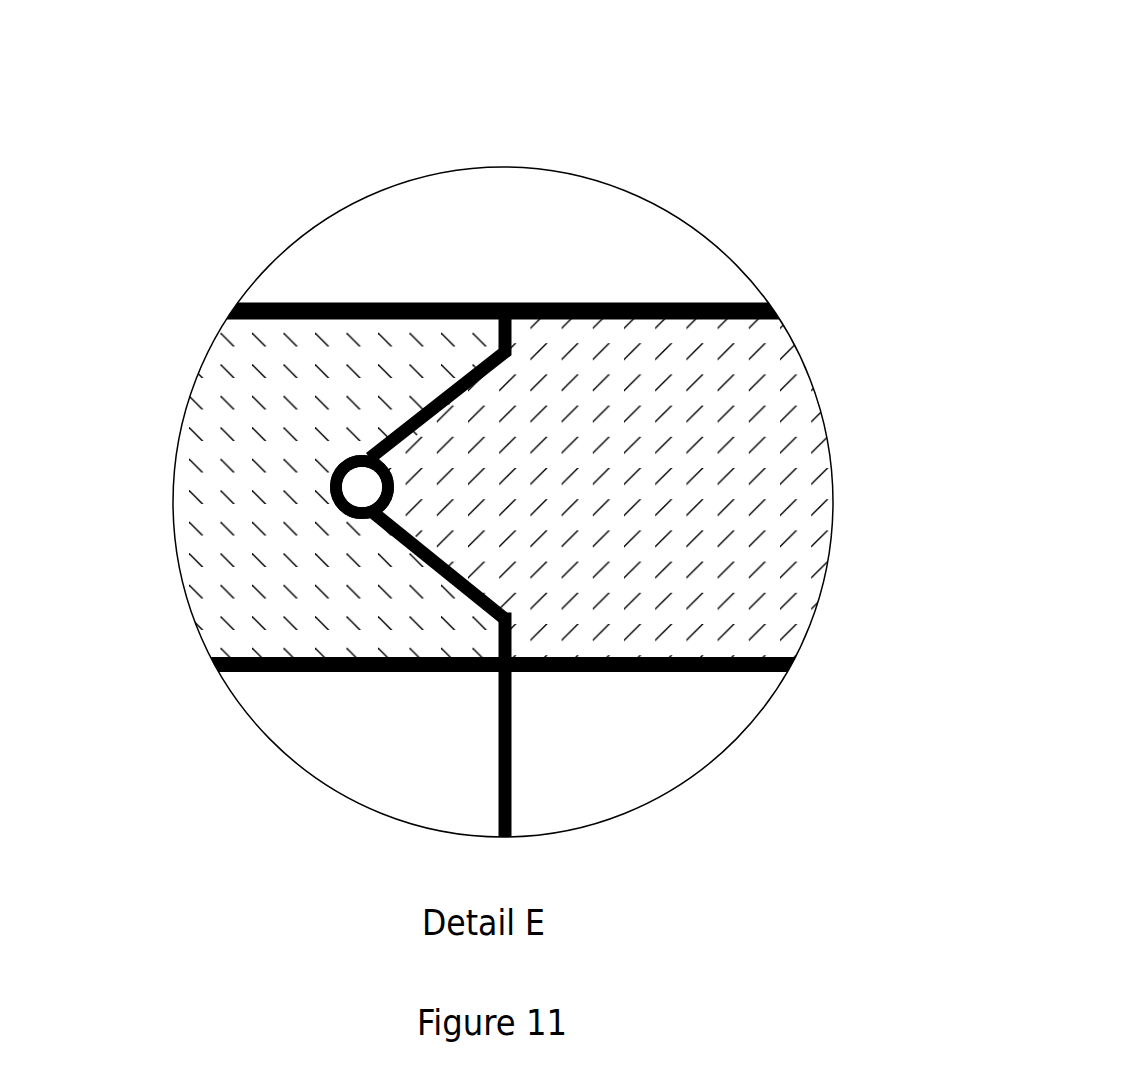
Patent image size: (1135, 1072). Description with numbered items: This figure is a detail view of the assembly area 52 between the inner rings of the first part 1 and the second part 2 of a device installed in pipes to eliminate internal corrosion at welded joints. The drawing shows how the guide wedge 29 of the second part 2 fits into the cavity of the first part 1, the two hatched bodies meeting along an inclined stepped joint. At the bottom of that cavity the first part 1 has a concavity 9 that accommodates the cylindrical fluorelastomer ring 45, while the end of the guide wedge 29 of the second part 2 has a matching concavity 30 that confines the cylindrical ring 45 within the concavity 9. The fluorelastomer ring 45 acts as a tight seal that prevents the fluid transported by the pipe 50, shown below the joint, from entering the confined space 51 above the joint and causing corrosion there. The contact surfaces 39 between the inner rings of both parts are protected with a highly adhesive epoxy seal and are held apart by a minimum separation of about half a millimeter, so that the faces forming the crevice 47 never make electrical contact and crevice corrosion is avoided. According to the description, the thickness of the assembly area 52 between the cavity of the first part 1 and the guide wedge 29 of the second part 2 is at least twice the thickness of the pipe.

The first part 1 is at (215, 500).
The second part 2 is at (793, 548).
The concavity 9 is at (312, 476).
The guide wedge 29 is at (447, 435).
The concavity 30 is at (411, 481).
The contact surfaces 39 is at (461, 564).
The cylindrical fluorelastomer ring 45 is at (353, 495).
The crevice 47 is at (516, 622).
The fluid transported by the pipe 50 is at (505, 722).
The confined space 51 is at (505, 254).
The assembly area 52 is at (683, 198).